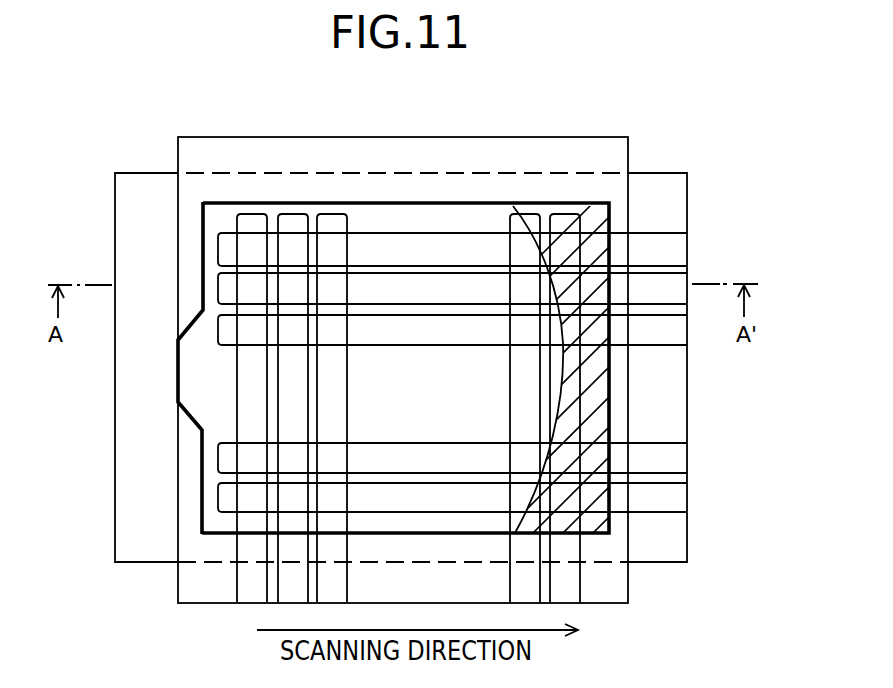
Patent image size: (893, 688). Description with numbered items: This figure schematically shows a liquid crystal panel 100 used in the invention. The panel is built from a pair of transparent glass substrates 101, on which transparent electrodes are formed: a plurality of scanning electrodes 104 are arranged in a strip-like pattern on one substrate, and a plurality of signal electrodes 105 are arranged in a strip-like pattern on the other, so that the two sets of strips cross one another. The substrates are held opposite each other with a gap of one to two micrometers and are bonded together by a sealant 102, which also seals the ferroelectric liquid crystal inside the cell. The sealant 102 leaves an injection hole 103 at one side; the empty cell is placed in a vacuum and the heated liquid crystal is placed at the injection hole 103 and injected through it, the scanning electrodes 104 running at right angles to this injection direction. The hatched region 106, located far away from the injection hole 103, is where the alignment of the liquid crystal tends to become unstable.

The liquid crystal panel 100 is at (653, 148).
The transparent glass substrates 101 is at (177, 573).
The sealant 102 is at (400, 202).
The injection hole 103 is at (177, 370).
The scanning electrodes 104 is at (572, 578).
The signal electrodes 105 is at (673, 495).
The region 106 is at (596, 217).